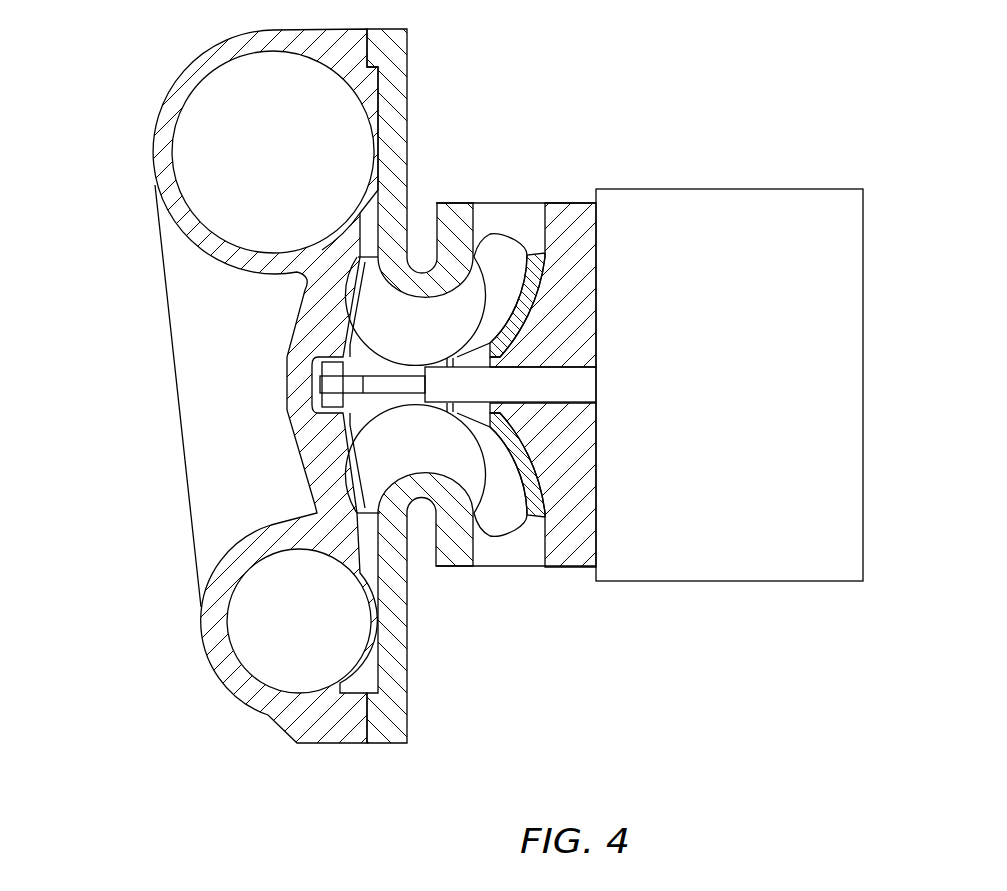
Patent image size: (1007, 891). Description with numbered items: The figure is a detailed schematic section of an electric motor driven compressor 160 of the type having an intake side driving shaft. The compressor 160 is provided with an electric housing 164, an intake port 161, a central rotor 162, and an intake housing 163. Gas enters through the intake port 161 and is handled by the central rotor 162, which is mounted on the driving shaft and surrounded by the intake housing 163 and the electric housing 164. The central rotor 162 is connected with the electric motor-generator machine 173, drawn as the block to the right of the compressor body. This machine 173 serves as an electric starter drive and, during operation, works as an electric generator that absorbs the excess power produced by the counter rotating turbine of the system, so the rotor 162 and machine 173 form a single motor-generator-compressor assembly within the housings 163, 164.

The electric motor driven compressor 160 is at (528, 628).
The intake port 161 is at (512, 203).
The central rotor 162 is at (390, 297).
The intake housing 163 is at (392, 113).
The electric housing 164 is at (172, 106).
The electric motor-generator machine 173 is at (740, 189).